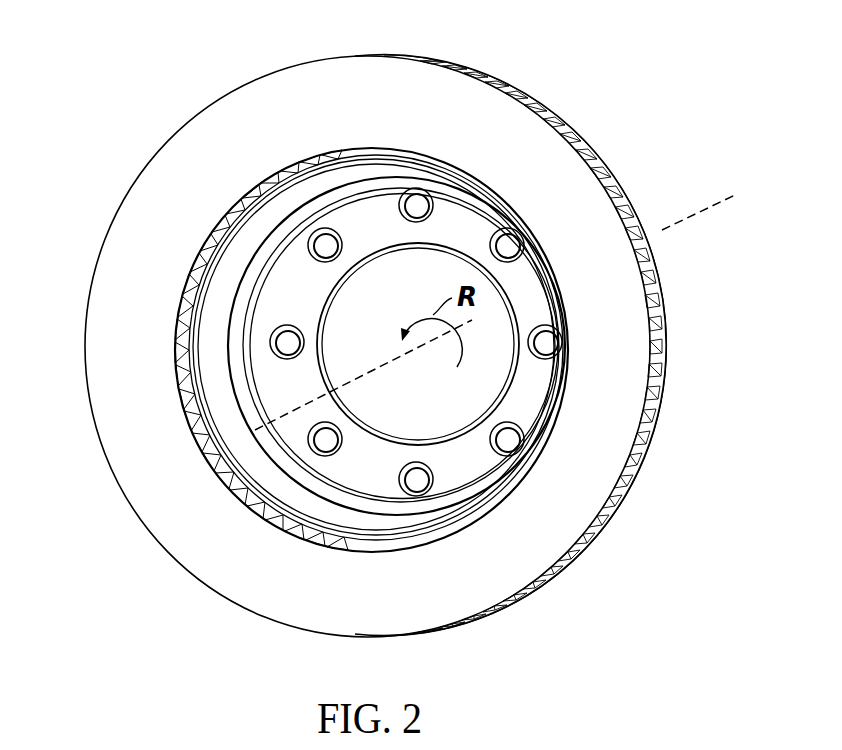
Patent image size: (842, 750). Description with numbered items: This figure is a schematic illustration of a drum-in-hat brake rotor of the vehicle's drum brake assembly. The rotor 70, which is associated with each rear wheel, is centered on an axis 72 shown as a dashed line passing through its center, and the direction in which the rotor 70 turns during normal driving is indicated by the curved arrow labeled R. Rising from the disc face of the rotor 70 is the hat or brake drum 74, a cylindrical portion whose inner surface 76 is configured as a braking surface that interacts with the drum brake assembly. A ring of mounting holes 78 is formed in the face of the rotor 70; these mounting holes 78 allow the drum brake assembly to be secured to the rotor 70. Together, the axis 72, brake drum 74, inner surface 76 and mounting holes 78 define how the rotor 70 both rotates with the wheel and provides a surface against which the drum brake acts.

The rotor 70 is at (622, 143).
The axis 72 is at (698, 212).
The brake drum 74 is at (370, 220).
The inner surface 76 is at (218, 400).
The mounting holes 78 is at (440, 492).